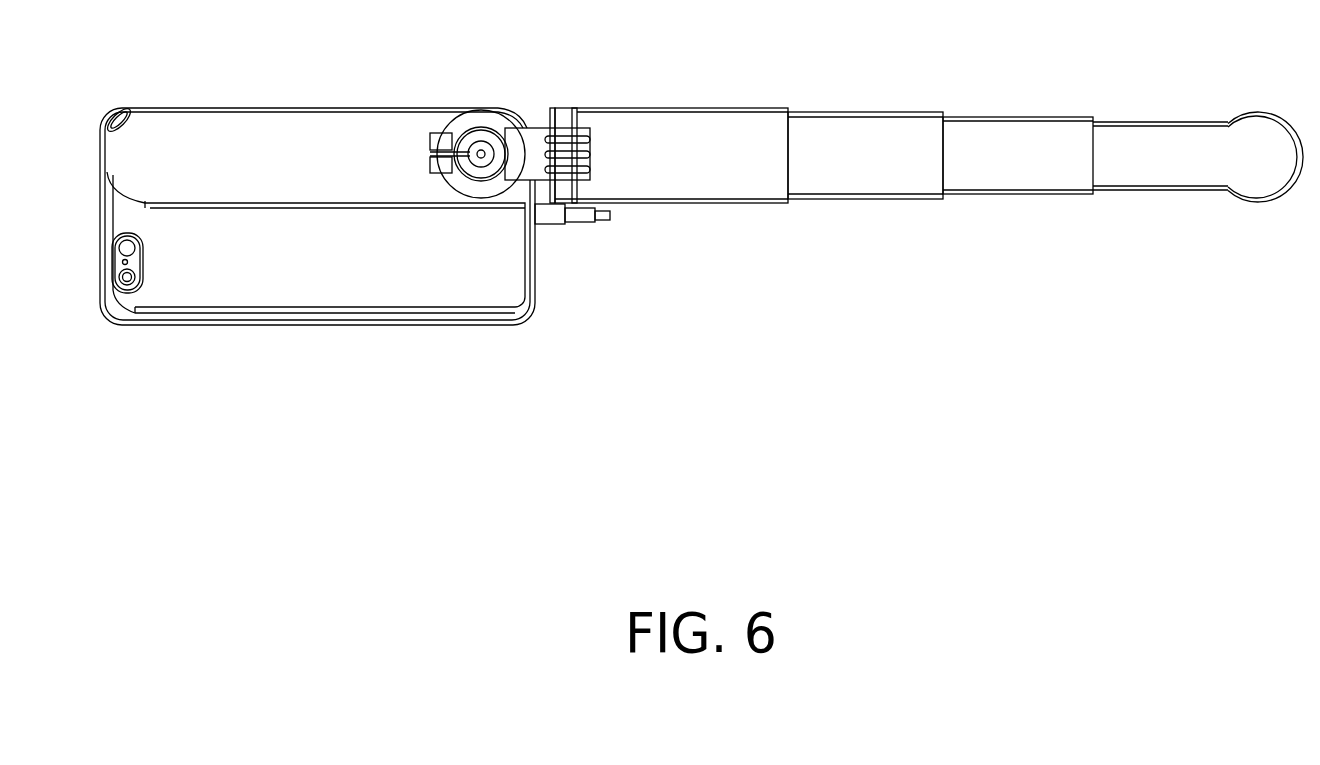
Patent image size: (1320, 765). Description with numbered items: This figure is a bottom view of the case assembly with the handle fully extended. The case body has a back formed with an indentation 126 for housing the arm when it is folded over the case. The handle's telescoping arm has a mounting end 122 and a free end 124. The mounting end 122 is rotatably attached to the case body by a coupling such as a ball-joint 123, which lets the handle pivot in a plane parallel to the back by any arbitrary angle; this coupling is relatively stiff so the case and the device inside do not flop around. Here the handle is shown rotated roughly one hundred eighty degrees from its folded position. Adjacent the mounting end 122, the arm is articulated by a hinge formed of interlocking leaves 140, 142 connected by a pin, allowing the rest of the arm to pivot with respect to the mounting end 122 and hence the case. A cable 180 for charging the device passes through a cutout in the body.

The indentation 126 is at (180, 128).
The mounting end 122 is at (477, 108).
The ball-joint 123 is at (483, 160).
The interlocking leaf 142 is at (558, 128).
The interlocking leaf 140 is at (577, 130).
The free end 124 is at (1278, 133).
The cable 180 is at (610, 216).